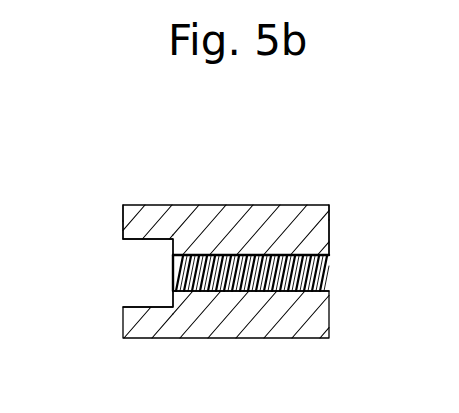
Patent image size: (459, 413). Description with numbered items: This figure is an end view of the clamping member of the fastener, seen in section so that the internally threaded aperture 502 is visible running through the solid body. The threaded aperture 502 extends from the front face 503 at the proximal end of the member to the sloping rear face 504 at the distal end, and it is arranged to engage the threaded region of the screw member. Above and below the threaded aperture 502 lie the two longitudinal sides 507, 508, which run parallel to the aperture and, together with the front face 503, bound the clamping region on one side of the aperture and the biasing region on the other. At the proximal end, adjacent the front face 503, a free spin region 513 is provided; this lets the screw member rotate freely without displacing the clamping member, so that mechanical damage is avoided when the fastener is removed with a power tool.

The internally threaded aperture 502 is at (290, 286).
The front face 503 is at (123, 221).
The sloping rear face 504 is at (330, 220).
The longitudinal side 507 is at (210, 339).
The longitudinal side 508 is at (212, 205).
The free spin region 513 is at (142, 306).